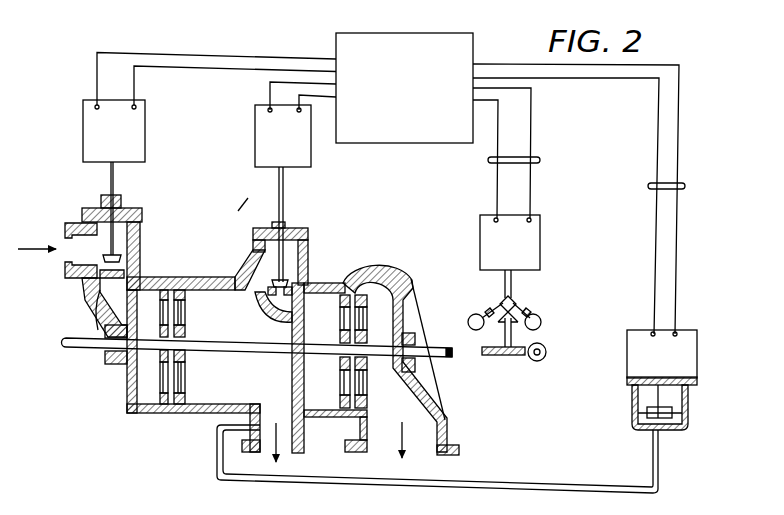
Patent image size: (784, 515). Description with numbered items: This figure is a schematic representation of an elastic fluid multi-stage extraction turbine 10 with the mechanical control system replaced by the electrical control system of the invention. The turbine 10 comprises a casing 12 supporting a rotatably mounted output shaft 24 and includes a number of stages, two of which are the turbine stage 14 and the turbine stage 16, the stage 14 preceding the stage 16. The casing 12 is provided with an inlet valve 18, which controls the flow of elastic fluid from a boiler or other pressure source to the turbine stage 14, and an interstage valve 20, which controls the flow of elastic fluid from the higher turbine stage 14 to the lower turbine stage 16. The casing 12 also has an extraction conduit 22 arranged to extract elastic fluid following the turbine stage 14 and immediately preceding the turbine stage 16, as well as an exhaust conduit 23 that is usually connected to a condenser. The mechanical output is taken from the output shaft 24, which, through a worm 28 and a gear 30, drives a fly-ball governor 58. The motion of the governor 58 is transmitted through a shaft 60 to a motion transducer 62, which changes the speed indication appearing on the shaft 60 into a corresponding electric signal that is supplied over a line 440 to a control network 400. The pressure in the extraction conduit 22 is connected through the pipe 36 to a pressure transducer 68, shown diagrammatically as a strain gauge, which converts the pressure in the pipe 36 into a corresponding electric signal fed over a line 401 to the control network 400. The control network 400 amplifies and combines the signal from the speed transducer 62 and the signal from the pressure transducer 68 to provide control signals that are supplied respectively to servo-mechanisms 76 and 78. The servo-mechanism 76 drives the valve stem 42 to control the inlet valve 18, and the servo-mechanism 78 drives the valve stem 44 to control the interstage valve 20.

The elastic fluid multi-stage extraction turbine 10 is at (68, 207).
The casing 12 is at (176, 413).
The turbine stage 14 is at (198, 324).
The turbine stage 16 is at (374, 308).
The inlet valve 18 is at (100, 290).
The interstage valve 20 is at (303, 290).
The extraction conduit 22 is at (283, 432).
The exhaust conduit 23 is at (452, 437).
The output shaft 24 is at (437, 372).
The worm 28 is at (536, 362).
The gear 30 is at (478, 352).
The pipe 36 is at (565, 489).
The valve stem 42 is at (114, 172).
The valve stem 44 is at (283, 192).
The fly-ball governor 58 is at (500, 300).
The shaft 60 is at (512, 282).
The motion transducer 62 is at (524, 243).
The pressure transducer 68 is at (685, 370).
The servo-mechanism 76 is at (95, 117).
The servo-mechanism 78 is at (256, 118).
The control network 400 is at (404, 88).
The line 401 is at (698, 173).
The line 440 is at (540, 160).